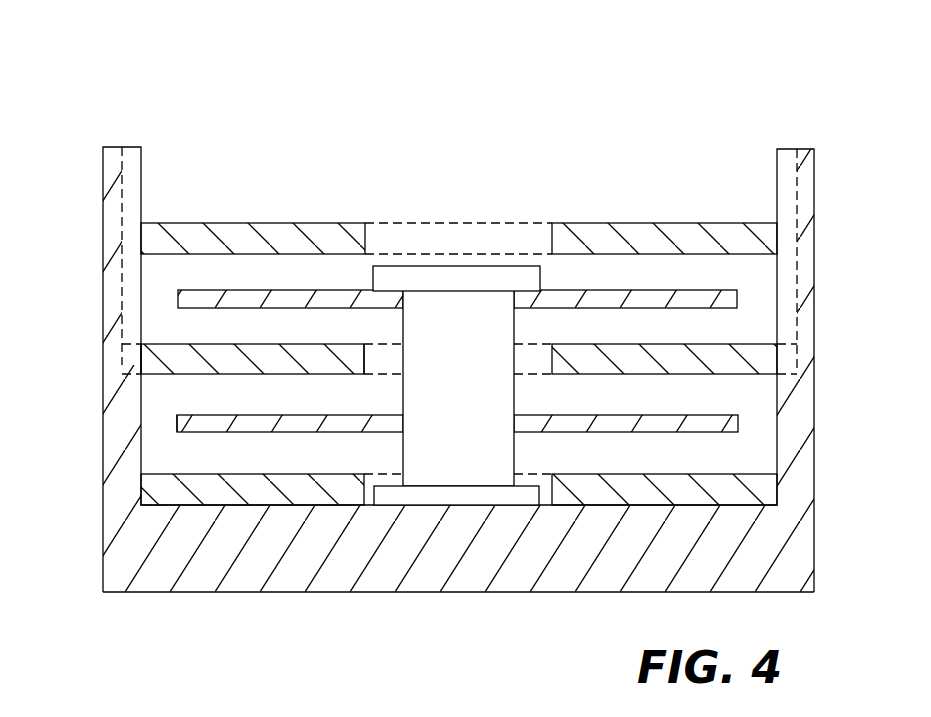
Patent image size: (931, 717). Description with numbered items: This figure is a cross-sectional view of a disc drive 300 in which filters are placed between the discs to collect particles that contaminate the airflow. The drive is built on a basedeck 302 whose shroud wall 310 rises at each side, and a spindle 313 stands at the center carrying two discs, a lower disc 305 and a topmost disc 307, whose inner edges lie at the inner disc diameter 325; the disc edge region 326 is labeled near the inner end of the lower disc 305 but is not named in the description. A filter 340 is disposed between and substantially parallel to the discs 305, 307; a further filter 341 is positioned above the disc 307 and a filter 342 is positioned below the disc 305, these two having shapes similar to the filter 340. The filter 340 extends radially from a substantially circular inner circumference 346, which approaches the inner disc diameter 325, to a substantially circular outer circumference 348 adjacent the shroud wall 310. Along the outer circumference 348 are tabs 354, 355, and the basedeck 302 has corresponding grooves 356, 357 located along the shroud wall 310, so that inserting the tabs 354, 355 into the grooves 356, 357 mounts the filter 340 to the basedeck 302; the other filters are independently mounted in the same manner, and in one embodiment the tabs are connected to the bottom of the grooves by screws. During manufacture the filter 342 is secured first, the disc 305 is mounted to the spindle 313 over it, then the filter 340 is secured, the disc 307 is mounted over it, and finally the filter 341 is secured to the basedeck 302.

The disc drive 300 is at (688, 120).
The basedeck 302 is at (437, 558).
The shroud wall 310 is at (138, 453).
The spindle 313 is at (474, 303).
The inner disc diameter 325 is at (403, 421).
The filter 341 is at (335, 232).
The filter 340 is at (315, 358).
The filter 342 is at (305, 493).
The disc 307 is at (214, 288).
The disc 305 is at (214, 412).
The inner circumference 346 is at (365, 364).
The electrode end edge 326 is at (177, 417).
The outer circumference 348 is at (138, 363).
The tab 355 is at (128, 357).
The groove 357 is at (122, 295).
The groove 356 is at (797, 303).
The tab 354 is at (787, 360).